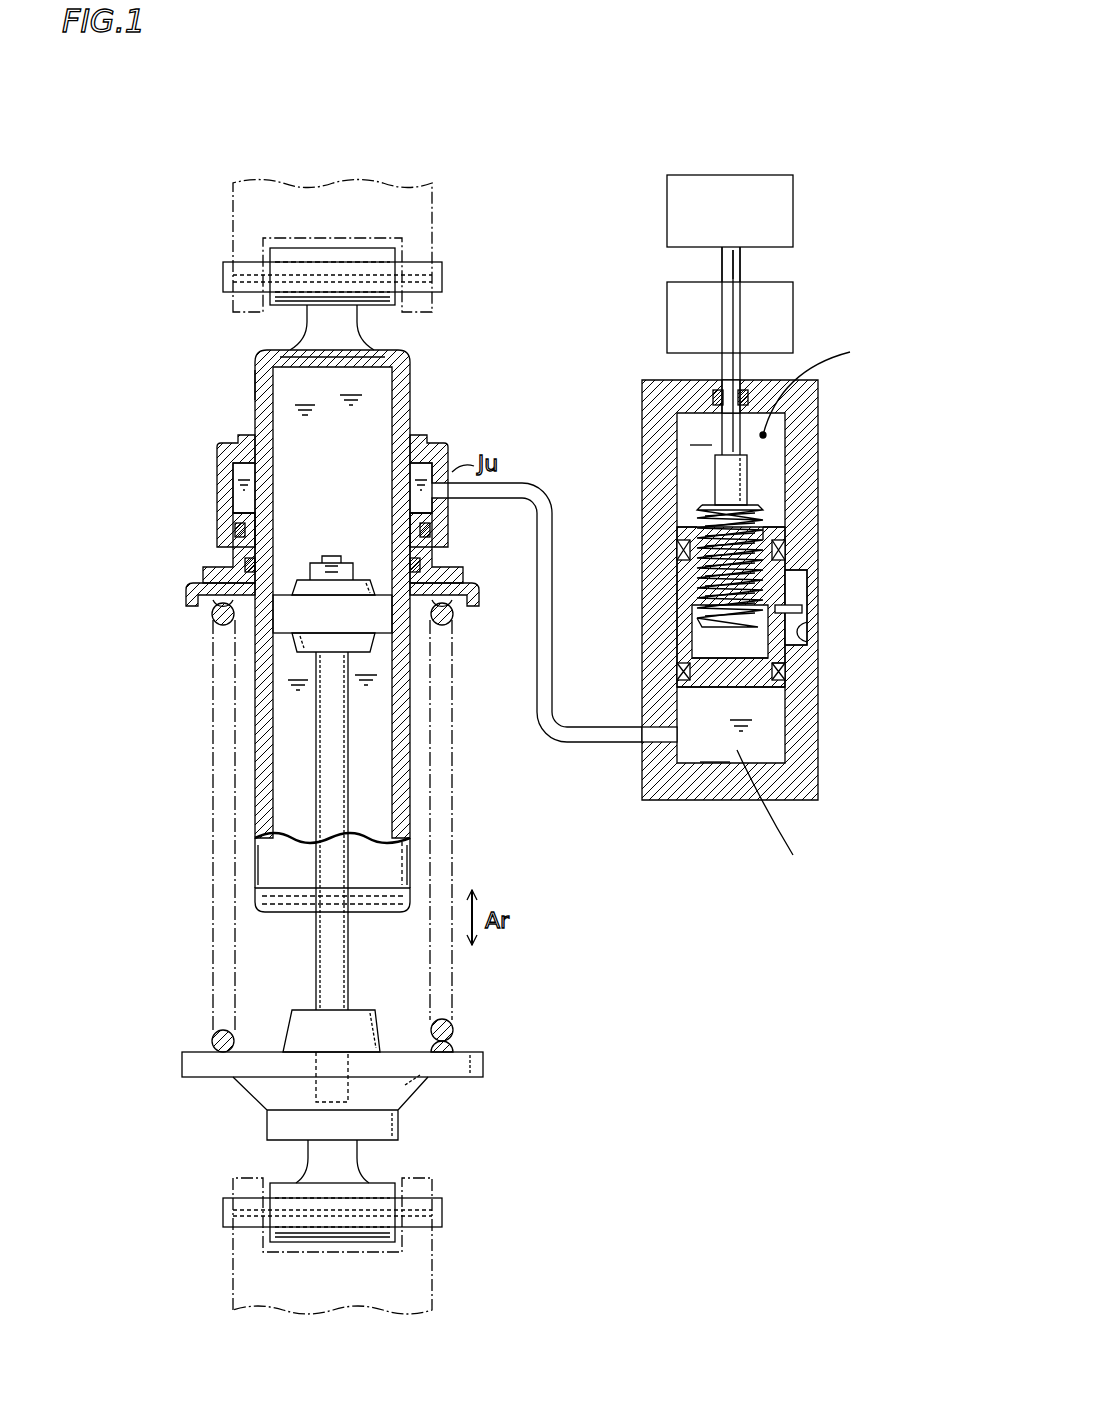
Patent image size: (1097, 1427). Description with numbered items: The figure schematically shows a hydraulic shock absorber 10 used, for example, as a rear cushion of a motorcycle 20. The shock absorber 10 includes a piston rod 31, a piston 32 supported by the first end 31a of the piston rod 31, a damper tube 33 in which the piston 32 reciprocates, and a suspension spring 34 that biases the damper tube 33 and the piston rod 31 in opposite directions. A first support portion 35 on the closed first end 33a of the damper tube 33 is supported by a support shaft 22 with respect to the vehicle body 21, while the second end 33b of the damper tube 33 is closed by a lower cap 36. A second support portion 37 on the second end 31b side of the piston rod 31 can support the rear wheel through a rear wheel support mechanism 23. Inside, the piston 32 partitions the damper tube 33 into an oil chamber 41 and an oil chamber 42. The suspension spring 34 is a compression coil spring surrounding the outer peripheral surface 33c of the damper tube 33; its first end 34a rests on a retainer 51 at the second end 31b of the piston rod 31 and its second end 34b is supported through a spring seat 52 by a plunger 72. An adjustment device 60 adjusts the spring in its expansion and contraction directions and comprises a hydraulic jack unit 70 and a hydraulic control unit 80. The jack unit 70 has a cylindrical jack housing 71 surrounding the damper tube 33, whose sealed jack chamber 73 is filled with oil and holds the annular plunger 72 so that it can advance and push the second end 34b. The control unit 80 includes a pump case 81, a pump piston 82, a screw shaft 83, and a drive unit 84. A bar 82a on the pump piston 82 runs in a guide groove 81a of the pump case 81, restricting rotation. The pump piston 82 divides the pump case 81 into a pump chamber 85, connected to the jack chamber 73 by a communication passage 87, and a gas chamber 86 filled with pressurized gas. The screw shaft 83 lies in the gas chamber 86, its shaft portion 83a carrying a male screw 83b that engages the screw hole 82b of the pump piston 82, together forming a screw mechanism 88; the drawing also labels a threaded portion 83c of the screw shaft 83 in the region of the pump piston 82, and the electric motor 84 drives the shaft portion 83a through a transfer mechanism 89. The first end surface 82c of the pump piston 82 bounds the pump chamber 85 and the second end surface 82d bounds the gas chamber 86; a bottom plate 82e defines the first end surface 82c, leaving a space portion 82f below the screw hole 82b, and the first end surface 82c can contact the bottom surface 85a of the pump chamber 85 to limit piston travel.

The hydraulic shock absorber 10 is at (832, 117).
The motorcycle 20 is at (263, 240).
The vehicle body 21 is at (233, 228).
The support shaft 22 is at (223, 275).
The rear wheel support mechanism 23 is at (240, 1290).
The piston rod 31 is at (232, 913).
The first end of the piston rod 31a is at (333, 560).
The second end of the piston rod 31b is at (317, 1090).
The piston 32 is at (292, 620).
The damper tube 33 is at (247, 629).
The first end of the damper tube 33a is at (295, 355).
The second end of the damper tube 33b is at (262, 875).
The outer peripheral surface of the damper tube 33c is at (255, 385).
The suspension spring 34 is at (268, 826).
The first end of the suspension spring 34a is at (218, 1035).
The second end of the suspension spring 34b is at (220, 605).
The first support portion 35 is at (292, 300).
The lower cap 36 is at (258, 903).
The second support portion 37 is at (275, 1232).
The oil chamber 41 is at (318, 460).
The oil chamber 42 is at (356, 739).
The retainer 51 is at (200, 1067).
The spring seat 52 is at (186, 597).
The adjustment device 60 is at (657, 96).
The hydraulic jack unit 70 is at (339, 354).
The jack housing 71 is at (222, 473).
The plunger 72 is at (238, 548).
The jack chamber 73 is at (237, 495).
The hydraulic control unit 80 is at (750, 489).
The pump case 81 is at (784, 590).
The guide groove 81a is at (808, 632).
The pump piston 82 is at (737, 588).
The bar 82a is at (800, 607).
The screw hole 82b is at (757, 503).
The first end surface 82c is at (747, 687).
The second end surface 82d is at (780, 517).
The bottom plate 82e is at (770, 668).
The space portion 82f is at (733, 672).
The screw shaft 83 is at (728, 450).
The shaft portion 83a is at (730, 427).
The male screw 83b is at (710, 508).
The threaded portion 83c is at (720, 622).
The drive unit 84 is at (790, 215).
The pump chamber 85 is at (683, 722).
The bottom surface of the pump chamber 85a is at (715, 755).
The gas chamber 86 is at (683, 457).
The communication passage 87 is at (573, 742).
The screw mechanism 88 is at (750, 414).
The transfer mechanism 89 is at (775, 308).